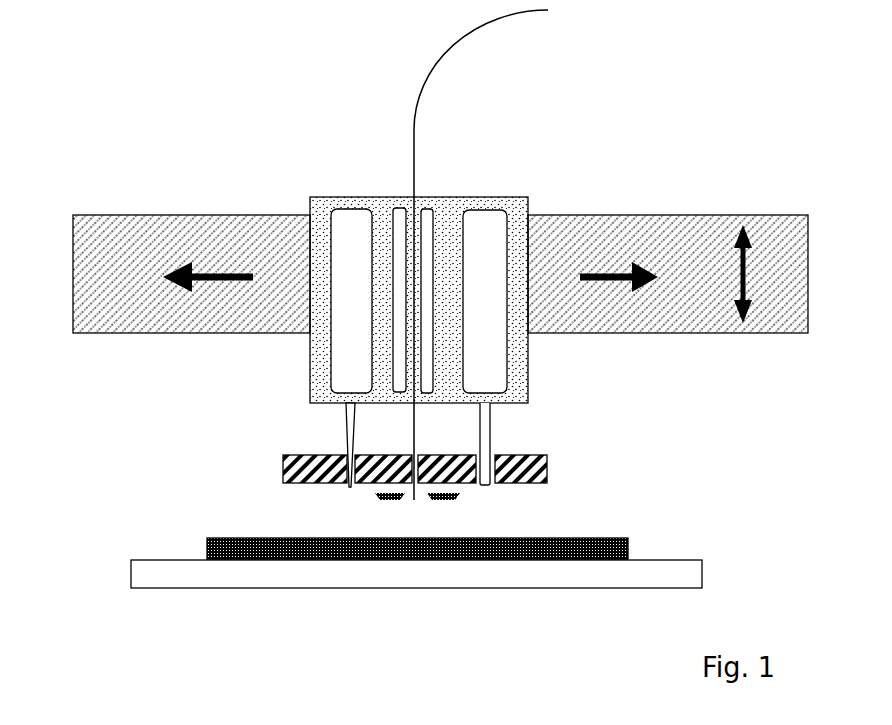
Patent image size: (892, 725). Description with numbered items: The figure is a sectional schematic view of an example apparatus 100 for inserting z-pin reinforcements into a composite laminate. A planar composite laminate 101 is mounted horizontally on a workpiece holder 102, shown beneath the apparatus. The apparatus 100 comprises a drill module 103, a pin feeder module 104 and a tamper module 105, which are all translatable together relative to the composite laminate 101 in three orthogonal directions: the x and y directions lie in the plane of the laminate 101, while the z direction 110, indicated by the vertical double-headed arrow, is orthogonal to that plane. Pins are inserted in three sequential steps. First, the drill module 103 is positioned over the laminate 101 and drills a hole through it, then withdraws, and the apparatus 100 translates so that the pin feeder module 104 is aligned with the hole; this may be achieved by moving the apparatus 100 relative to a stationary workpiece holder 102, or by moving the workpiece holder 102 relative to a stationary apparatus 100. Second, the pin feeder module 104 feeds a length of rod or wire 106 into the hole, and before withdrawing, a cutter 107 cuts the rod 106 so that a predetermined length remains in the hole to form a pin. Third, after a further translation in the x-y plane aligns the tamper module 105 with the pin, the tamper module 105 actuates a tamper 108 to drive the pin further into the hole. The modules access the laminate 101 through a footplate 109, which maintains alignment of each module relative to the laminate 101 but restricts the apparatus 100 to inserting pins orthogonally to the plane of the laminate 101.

The apparatus 100 is at (155, 101).
The composite laminate 101 is at (605, 542).
The workpiece holder 102 is at (153, 568).
The drill module 103 is at (338, 332).
The pin feeder module 104 is at (402, 222).
The tamper module 105 is at (487, 357).
The rod or wire 106 is at (413, 130).
The cutter 107 is at (407, 494).
The tamper 108 is at (483, 440).
The footplate 109 is at (285, 458).
The z direction 110 is at (726, 274).